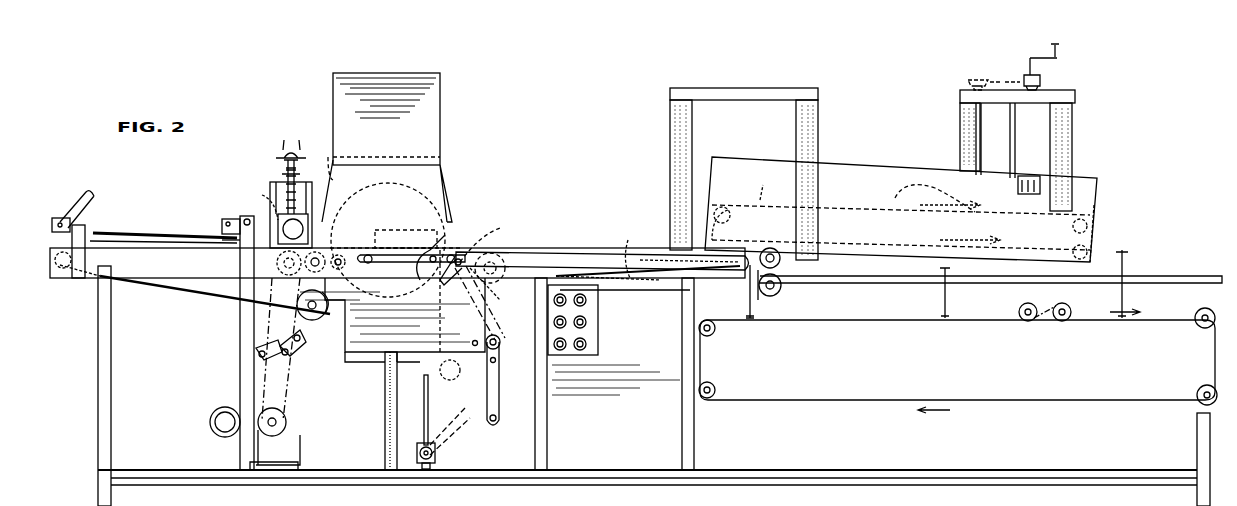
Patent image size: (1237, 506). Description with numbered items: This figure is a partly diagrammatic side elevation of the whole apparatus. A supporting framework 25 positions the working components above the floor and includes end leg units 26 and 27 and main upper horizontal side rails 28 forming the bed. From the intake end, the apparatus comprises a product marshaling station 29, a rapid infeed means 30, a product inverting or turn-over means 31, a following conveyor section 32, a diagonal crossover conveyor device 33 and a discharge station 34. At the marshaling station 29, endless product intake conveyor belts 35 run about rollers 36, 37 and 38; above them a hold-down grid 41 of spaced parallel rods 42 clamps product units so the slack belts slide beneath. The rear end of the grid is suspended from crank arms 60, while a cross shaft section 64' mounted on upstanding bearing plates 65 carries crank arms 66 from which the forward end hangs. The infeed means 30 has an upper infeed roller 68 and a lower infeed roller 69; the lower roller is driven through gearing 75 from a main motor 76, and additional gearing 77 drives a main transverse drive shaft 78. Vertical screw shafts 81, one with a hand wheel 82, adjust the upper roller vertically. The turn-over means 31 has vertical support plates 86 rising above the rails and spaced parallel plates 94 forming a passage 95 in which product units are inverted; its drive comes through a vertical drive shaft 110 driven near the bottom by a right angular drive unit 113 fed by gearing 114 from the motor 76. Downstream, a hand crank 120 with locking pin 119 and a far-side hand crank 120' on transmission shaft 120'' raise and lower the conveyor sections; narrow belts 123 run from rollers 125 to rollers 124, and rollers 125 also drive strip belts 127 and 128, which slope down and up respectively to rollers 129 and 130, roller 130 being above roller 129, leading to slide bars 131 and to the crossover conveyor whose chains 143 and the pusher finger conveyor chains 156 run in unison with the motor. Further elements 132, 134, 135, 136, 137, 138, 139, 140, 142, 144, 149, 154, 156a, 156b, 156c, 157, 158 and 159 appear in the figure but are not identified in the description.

The supporting framework 25 is at (112, 392).
The end leg unit 26 is at (98, 440).
The end leg unit 27 is at (1197, 435).
The main upper horizontal side rails 28 is at (193, 285).
The product marshaling station 29 is at (167, 194).
The rapid infeed means 30 is at (291, 143).
The product inverting or turn-over means 31 is at (454, 155).
The conveyor section 32 is at (592, 244).
The diagonal crossover conveyor device 33 is at (900, 161).
The discharge station 34 is at (1164, 259).
The product intake conveyor belts 35 is at (150, 283).
The roller 36 is at (70, 278).
The roller 37 is at (336, 318).
The guide roller 38 is at (328, 216).
The product hold-down grid 41 is at (130, 232).
The spaced parallel rods 42 is at (200, 237).
The crank arms 60 is at (62, 217).
The cross shaft section 64' is at (243, 198).
The upstanding bearing plates 65 is at (243, 272).
The crank arms 66 is at (230, 218).
The upper infeed roller 68 is at (272, 204).
The lower infeed roller 69 is at (276, 262).
The gearing 75 is at (278, 312).
The main motor 76 is at (296, 433).
The additional gearing 77 is at (290, 392).
The main transverse drive shaft 78 is at (290, 358).
The vertical screw shafts 81 is at (298, 195).
The hand wheel 82 is at (280, 155).
The vertical support plates 86 is at (440, 85).
The spaced parallel plates 94 is at (425, 235).
The passage 95 is at (364, 231).
The vertical drive shaft 110 is at (430, 390).
The right angular drive unit 113 is at (436, 454).
The gearing 114 is at (448, 440).
The locking pin 119 is at (420, 282).
The hand crank 120 is at (461, 242).
The hand crank 120' is at (503, 383).
The transmission shaft 120'' is at (514, 343).
The belts 123 is at (496, 240).
The rollers 124 is at (470, 250).
The rollers 125 is at (488, 290).
The strip or tape belts 127 is at (745, 280).
The strip or tape belts 128 is at (560, 256).
The rollers 129 is at (778, 292).
The roller 130 is at (772, 241).
The slide bars 131 is at (898, 284).
The rail 132 is at (992, 283).
The hopper wall 134 is at (858, 166).
The gantry 135 is at (818, 122).
The gantry 136 is at (1072, 118).
The screw rod 137 is at (1025, 150).
The bracket 138 is at (1018, 182).
The cap 139 is at (1005, 78).
The crank 140 is at (1060, 55).
The conveyor path 142 is at (958, 188).
The crossover conveyor chains 143 is at (901, 208).
The roller 144 is at (728, 205).
The post 149 is at (1128, 260).
The support 154 is at (752, 312).
The chains 156 is at (986, 330).
The belt run 156a is at (912, 322).
The belt run 156b is at (1172, 306).
The belt run 156c is at (982, 400).
The roller 157 is at (712, 396).
The roller 158 is at (715, 328).
The roller 159 is at (1198, 330).